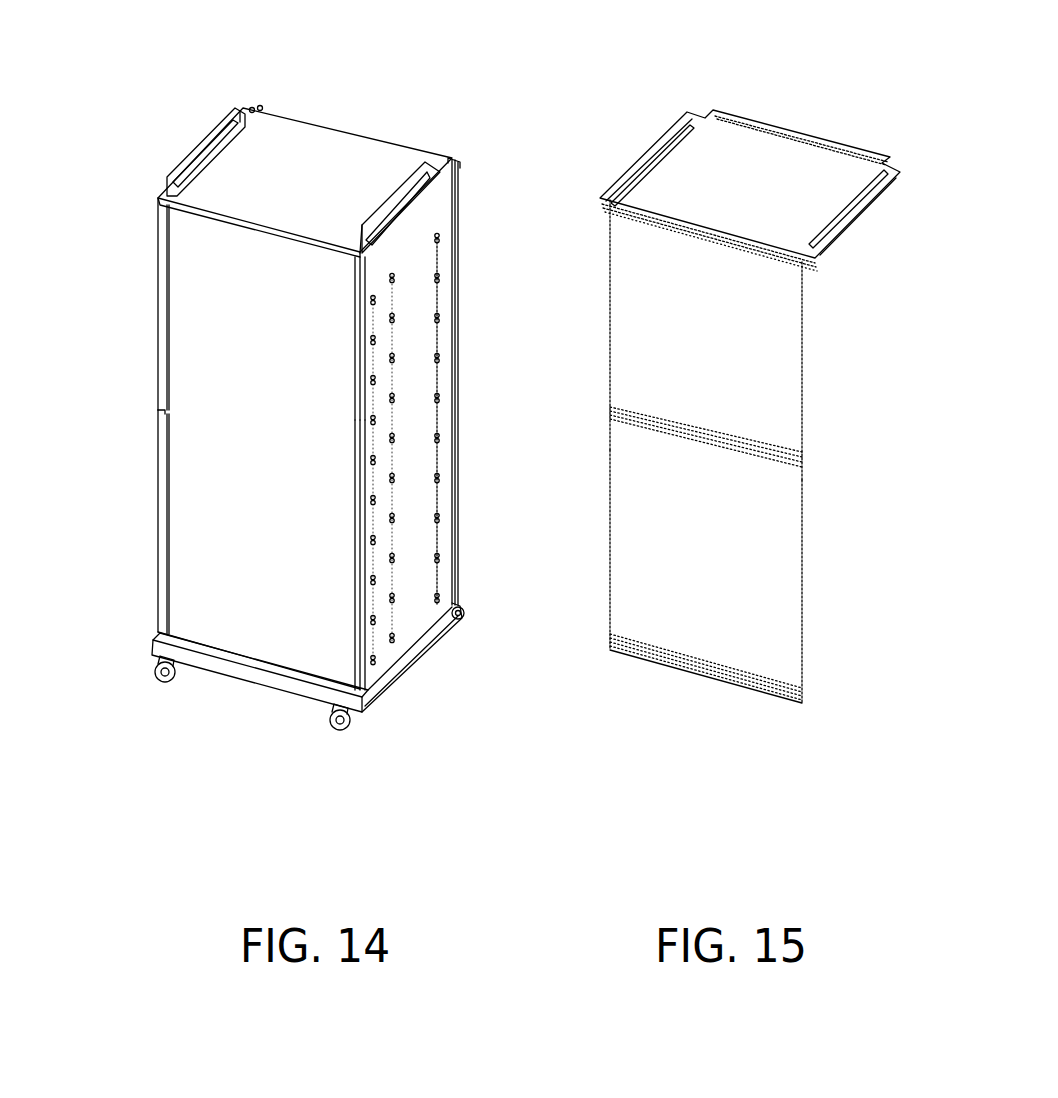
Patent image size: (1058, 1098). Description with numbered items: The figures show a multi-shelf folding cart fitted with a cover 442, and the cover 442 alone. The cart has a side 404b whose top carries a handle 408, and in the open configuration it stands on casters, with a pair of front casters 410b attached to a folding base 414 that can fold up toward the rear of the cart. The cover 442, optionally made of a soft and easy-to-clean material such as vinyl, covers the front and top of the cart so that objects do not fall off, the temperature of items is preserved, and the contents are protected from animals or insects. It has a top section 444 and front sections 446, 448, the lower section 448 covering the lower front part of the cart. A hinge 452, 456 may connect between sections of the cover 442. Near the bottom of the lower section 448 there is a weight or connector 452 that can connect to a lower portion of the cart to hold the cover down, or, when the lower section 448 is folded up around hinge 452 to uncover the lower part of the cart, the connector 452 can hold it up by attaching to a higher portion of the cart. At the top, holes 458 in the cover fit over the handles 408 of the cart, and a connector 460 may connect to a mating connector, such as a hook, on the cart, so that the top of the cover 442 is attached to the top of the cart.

In FIG. 14, the cover 442 is at (373, 97).
In FIG. 15, the cover 442 is at (798, 95).
In FIG. 14, the top section 444 is at (333, 140).
In FIG. 15, the top section 444 is at (755, 147).
In FIG. 14, the handle 408 is at (210, 130).
In FIG. 14, the front section 446 is at (200, 313).
In FIG. 15, the front section 446 is at (782, 354).
In FIG. 14, the lower section 448 is at (200, 533).
In FIG. 15, the lower section 448 is at (778, 558).
In FIG. 14, the side 404b is at (413, 465).
In FIG. 14, the folding base 414 is at (238, 673).
In FIG. 14, the front caster 410b is at (337, 730).
In FIG. 15, the holes 458 is at (647, 148).
In FIG. 15, the connector 460 is at (862, 148).
In FIG. 15, the hinge 456 is at (647, 213).
In FIG. 15, the hinge / weight or connector 452 is at (802, 464).